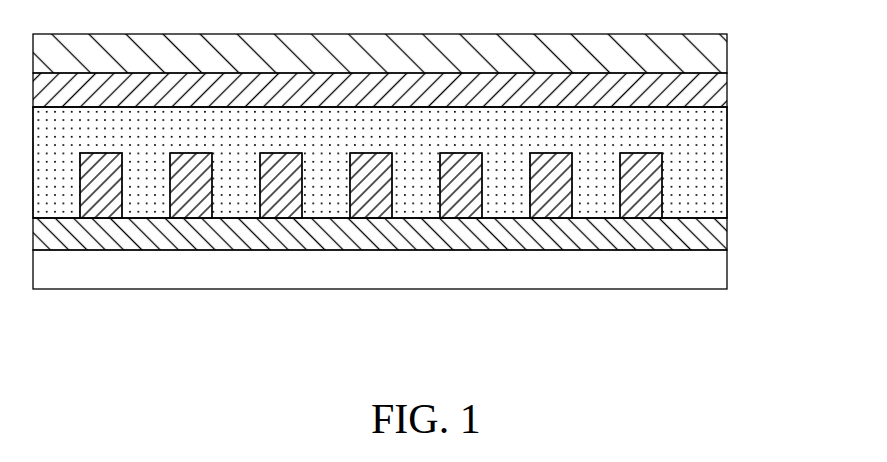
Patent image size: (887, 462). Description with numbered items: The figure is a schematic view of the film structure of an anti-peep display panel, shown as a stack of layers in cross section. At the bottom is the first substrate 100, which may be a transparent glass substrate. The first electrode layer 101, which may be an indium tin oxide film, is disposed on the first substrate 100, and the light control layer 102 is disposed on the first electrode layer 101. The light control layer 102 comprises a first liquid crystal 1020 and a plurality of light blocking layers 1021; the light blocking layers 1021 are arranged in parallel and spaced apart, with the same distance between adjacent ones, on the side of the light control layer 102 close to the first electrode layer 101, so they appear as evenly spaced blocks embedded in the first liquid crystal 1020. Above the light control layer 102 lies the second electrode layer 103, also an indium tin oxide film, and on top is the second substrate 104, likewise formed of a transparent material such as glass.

The first substrate 100 is at (727, 268).
The first electrode layer 101 is at (727, 232).
The light control layer 102 is at (727, 202).
The first liquid crystal 1020 is at (693, 137).
The light blocking layers 1021 is at (663, 185).
The second electrode layer 103 is at (727, 98).
The second substrate 104 is at (727, 52).